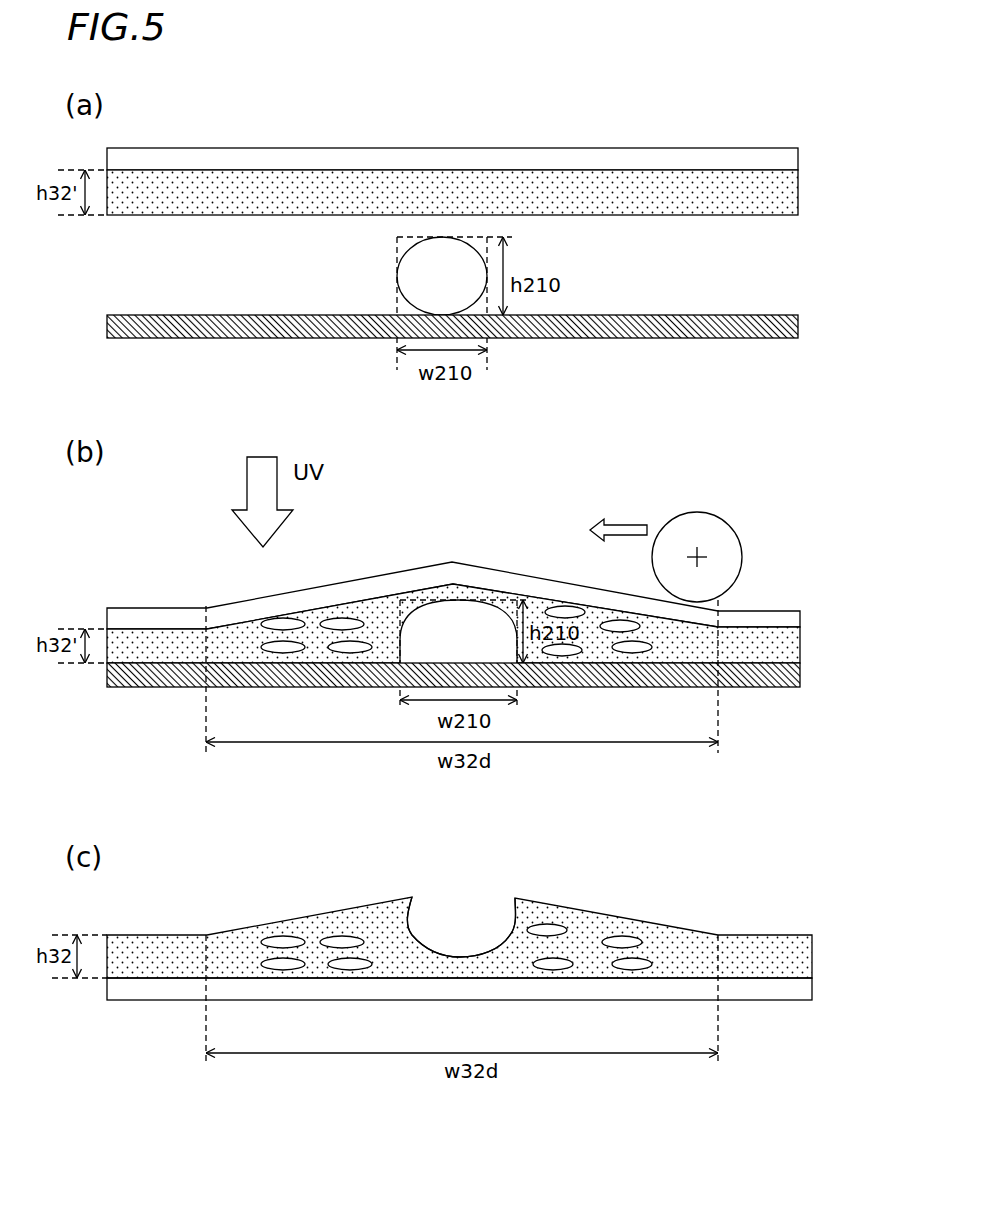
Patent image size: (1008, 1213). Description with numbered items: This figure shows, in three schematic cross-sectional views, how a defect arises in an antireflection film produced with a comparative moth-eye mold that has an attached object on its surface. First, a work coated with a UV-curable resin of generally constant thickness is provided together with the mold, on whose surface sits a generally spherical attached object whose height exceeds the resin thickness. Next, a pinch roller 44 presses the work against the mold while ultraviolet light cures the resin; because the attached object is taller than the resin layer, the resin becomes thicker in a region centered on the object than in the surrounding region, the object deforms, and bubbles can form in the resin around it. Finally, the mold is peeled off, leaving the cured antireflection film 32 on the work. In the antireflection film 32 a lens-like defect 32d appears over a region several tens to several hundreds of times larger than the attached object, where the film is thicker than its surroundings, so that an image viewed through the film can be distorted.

The pinch roller 44 is at (710, 532).
The antireflection film 32 is at (501, 937).
The defect 32d is at (608, 900).